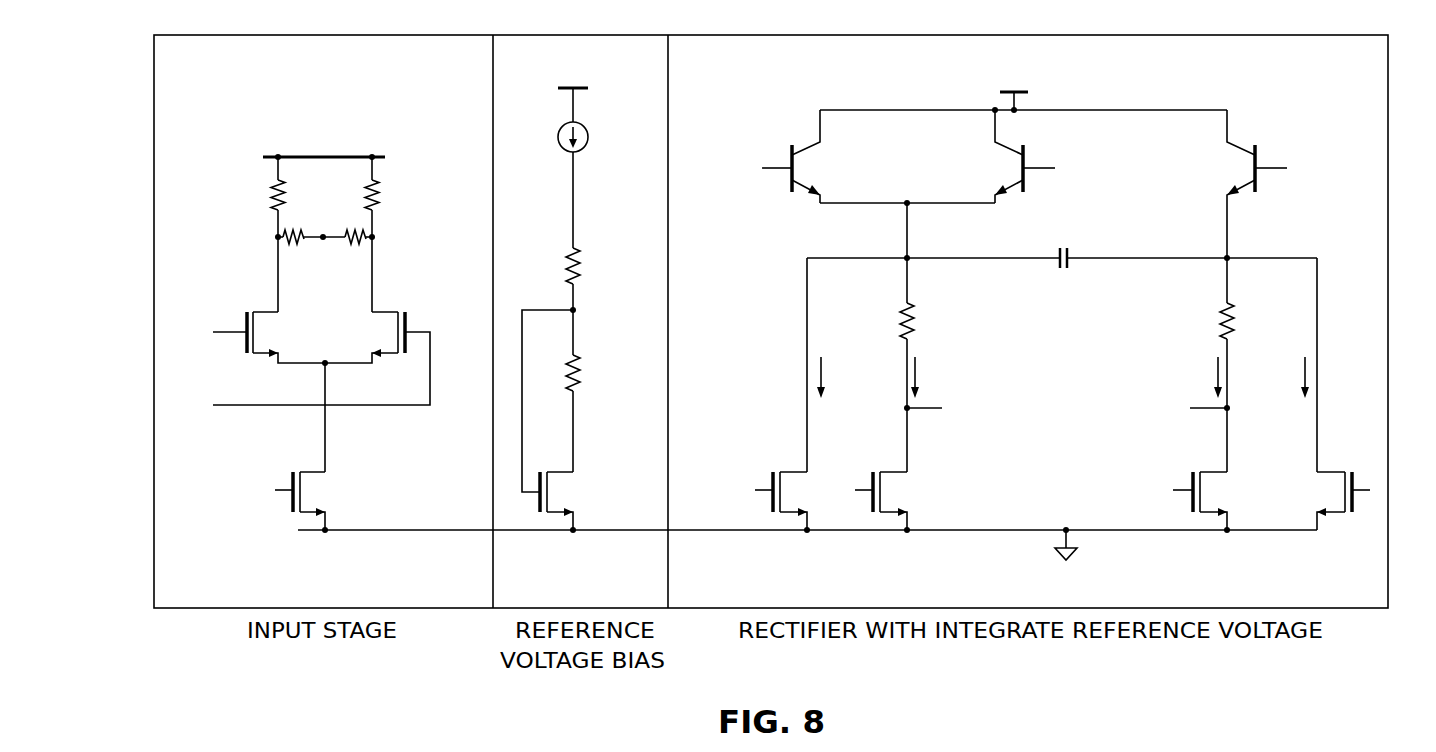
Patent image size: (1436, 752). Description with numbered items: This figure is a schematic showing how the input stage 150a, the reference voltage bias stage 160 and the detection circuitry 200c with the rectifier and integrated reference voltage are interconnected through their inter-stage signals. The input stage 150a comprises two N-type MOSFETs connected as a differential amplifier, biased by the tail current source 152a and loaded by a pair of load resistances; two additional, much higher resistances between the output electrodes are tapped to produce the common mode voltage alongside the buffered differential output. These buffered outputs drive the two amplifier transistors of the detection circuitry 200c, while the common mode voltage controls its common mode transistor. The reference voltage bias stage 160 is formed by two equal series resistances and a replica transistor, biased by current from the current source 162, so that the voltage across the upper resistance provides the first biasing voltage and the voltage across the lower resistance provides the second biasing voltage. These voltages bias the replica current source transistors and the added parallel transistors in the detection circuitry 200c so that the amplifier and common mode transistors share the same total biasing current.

The input stage 150a is at (286, 550).
The tail current source 152a is at (313, 472).
The reference voltage bias circuit 160 is at (552, 550).
The current source 162 is at (563, 152).
The detection circuitry 200c is at (1092, 357).